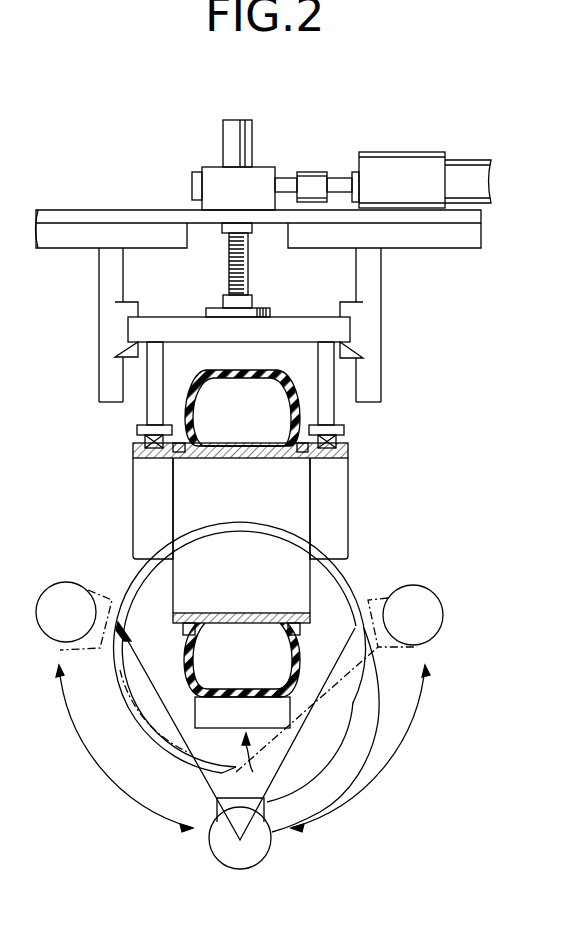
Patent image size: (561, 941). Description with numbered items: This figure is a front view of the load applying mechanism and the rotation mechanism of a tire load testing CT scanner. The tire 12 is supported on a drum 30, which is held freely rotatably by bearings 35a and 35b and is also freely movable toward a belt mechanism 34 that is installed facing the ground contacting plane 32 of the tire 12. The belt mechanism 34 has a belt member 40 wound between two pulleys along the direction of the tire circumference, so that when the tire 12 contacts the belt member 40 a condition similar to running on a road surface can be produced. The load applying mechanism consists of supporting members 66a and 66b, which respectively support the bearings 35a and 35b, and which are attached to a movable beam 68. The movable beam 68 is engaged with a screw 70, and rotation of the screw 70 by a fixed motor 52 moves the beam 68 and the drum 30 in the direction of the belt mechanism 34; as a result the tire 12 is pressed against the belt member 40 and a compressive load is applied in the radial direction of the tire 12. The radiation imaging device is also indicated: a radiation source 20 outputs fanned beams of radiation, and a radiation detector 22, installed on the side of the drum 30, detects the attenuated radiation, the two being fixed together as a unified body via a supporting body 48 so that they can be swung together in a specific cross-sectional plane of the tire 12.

The tire 12 is at (189, 400).
The radiation source 20 is at (93, 640).
The radiation detector 22 is at (238, 523).
The drum 30 is at (240, 458).
The ground contacting plane 32 is at (260, 375).
The belt mechanism 34 is at (307, 722).
The bearing 35a is at (344, 429).
The bearing 35b is at (137, 429).
The belt member 40 is at (217, 728).
The supporting body 48 is at (357, 760).
The fixed motor 52 is at (405, 152).
The supporting member 66a is at (327, 385).
The supporting member 66b is at (152, 385).
The movable beam 68 is at (303, 320).
The screw 70 is at (229, 270).